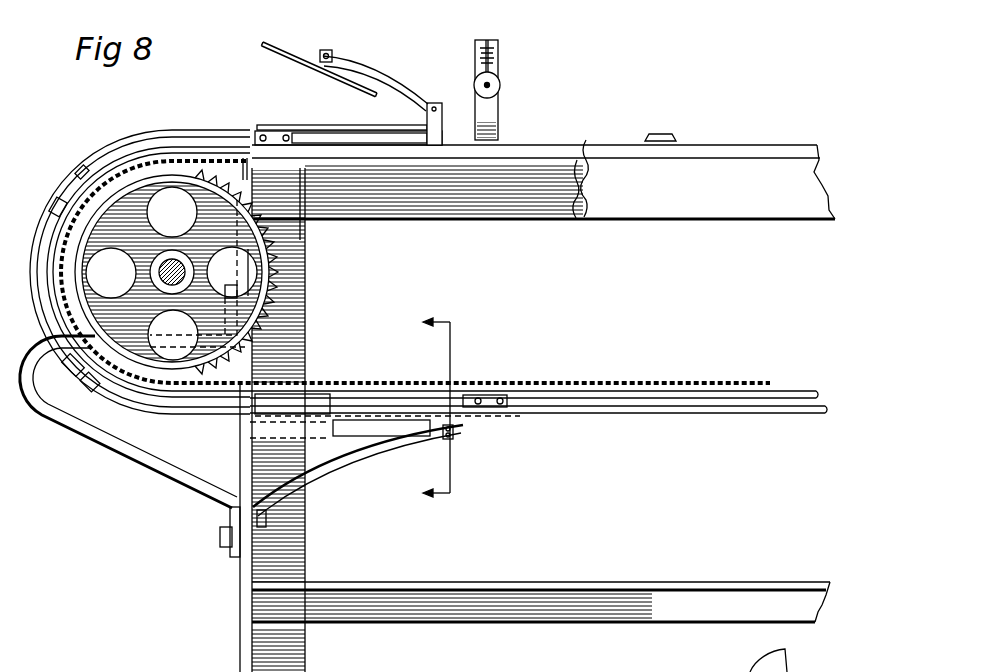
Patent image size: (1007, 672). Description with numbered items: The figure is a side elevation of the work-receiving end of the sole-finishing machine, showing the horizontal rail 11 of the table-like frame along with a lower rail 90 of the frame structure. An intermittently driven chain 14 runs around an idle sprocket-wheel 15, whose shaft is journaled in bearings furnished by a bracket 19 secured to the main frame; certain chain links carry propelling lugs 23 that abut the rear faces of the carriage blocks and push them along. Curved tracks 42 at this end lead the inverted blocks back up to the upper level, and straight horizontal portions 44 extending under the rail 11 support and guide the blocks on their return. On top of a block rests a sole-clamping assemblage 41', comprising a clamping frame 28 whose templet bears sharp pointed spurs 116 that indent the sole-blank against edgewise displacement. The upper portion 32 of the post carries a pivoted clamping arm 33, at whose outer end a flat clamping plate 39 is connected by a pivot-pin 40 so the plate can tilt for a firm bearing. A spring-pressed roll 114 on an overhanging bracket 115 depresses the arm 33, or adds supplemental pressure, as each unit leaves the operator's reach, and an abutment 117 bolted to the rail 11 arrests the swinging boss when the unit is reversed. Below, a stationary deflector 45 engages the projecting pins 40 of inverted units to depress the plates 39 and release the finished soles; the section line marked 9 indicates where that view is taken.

The rail 11 is at (758, 152).
The chain 14 is at (578, 381).
The idle sprocket-wheel 15 is at (250, 256).
The bracket 19 is at (167, 467).
The propelling lug 23 is at (513, 388).
The clamping frame 28 is at (416, 120).
The upper portion of post 32 is at (442, 121).
The clamping arm 33 is at (398, 86).
The clamping plate 39 is at (291, 50).
The pivot-pin 40 is at (330, 53).
The sole-clamping assemblage 41' is at (148, 244).
The curved track 42 is at (78, 168).
The straight horizontal rail portion 44 is at (656, 400).
The deflector 45 is at (340, 465).
The rail 90 is at (553, 584).
The spring-pressed roll 114 is at (498, 84).
The overhanging bracket 115 is at (498, 117).
The spur 116 is at (291, 124).
The abutment 117 is at (656, 134).
The section line 9 is at (440, 407).